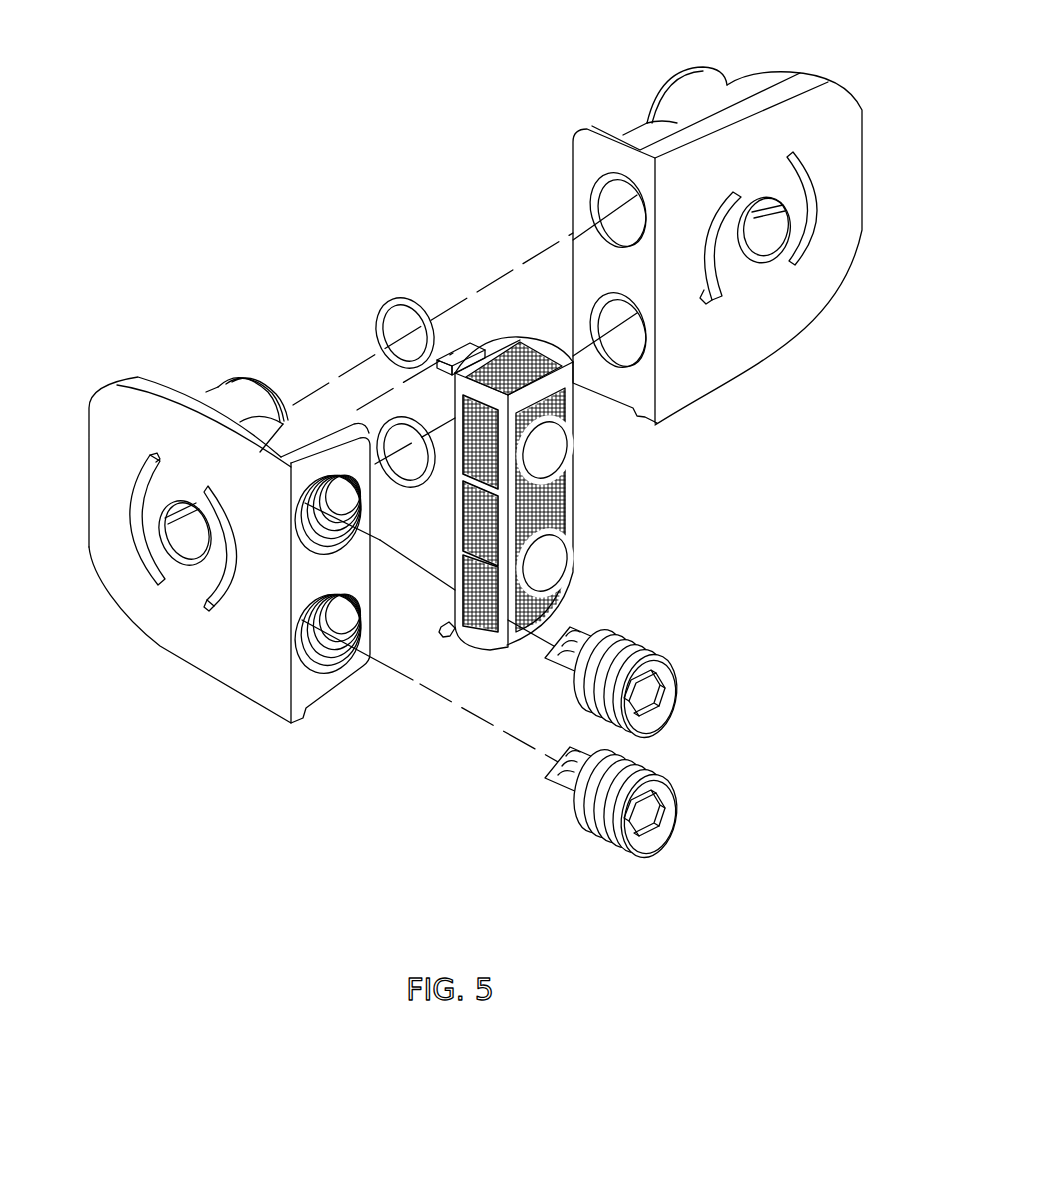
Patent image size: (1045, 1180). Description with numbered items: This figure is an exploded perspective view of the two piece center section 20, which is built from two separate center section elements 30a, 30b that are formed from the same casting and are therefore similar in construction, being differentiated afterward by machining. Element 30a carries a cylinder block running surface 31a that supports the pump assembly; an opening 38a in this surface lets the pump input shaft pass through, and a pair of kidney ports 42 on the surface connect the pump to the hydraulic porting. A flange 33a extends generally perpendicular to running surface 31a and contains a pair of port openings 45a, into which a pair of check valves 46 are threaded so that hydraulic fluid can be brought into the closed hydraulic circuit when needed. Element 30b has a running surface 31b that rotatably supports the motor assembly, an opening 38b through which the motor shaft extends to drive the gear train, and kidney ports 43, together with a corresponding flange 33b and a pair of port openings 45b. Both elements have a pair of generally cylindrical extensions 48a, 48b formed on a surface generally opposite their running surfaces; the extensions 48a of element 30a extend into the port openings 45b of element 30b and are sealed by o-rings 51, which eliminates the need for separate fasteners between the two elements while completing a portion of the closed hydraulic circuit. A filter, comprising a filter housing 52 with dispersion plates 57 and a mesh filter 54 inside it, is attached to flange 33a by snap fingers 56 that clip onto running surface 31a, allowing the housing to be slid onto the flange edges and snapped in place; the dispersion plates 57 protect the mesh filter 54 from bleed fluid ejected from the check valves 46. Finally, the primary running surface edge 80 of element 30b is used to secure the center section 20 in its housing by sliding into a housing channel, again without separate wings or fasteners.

The center section 20 is at (244, 107).
The center section element 30a is at (211, 380).
The center section element 30b is at (760, 72).
The cylinder block running surface 31a is at (205, 474).
The running surface 31b is at (780, 171).
The flange 33a is at (378, 574).
The flange 33b is at (598, 128).
The opening 38a is at (192, 545).
The opening 38b is at (774, 224).
The kidney ports 42 is at (138, 462).
The kidney ports 43 is at (723, 201).
The port openings 45a is at (326, 528).
The port openings 45b is at (608, 196).
The check valves 46 is at (563, 671).
The extensions 48a is at (243, 385).
The extensions 48b is at (690, 83).
The o-rings 51 is at (377, 323).
The filter housing 52 is at (516, 493).
The mesh filter 54 is at (463, 539).
The fingers 56 is at (452, 347).
The dispersion plates 57 is at (534, 460).
The running surface edge 80 is at (830, 82).